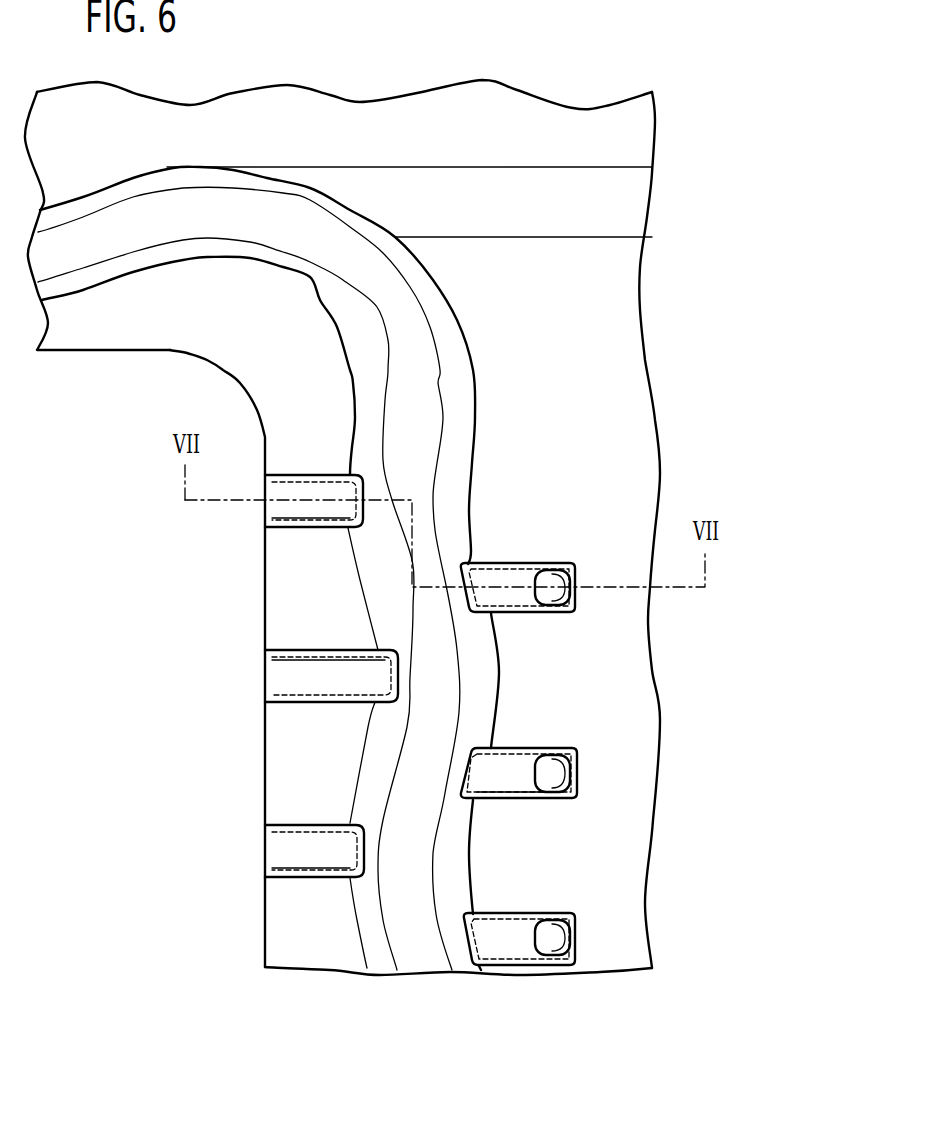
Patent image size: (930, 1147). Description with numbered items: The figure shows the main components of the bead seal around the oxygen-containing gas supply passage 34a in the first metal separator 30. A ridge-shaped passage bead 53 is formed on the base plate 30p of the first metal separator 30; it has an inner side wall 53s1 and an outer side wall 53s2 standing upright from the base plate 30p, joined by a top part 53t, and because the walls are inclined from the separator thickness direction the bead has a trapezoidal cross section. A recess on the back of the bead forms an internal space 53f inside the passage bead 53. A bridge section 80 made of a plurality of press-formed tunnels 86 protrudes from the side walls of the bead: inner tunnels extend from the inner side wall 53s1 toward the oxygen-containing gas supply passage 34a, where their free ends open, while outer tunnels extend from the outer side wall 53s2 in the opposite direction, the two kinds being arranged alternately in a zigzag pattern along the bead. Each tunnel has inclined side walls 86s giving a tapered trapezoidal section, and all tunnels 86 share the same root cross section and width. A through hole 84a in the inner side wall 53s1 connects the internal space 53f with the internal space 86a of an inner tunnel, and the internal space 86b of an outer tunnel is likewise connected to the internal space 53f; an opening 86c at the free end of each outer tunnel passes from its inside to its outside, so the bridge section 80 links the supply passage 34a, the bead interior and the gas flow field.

The first metal separator 30 is at (607, 45).
The base plate 30p is at (623, 378).
The passage bead 53 is at (436, 289).
The top part 53t is at (420, 383).
The inner side wall 53s1 is at (380, 403).
The outer side wall 53s2 is at (457, 409).
The internal space 53f is at (410, 910).
The oxygen-containing gas supply passage 34a is at (230, 925).
The tunnels 86 is at (280, 508).
The through hole 84a is at (350, 490).
The side walls 86s is at (300, 482).
The internal space 86a is at (305, 668).
The internal space 86b is at (512, 772).
The opening 86c is at (563, 593).
The bridge section 80 is at (586, 553).